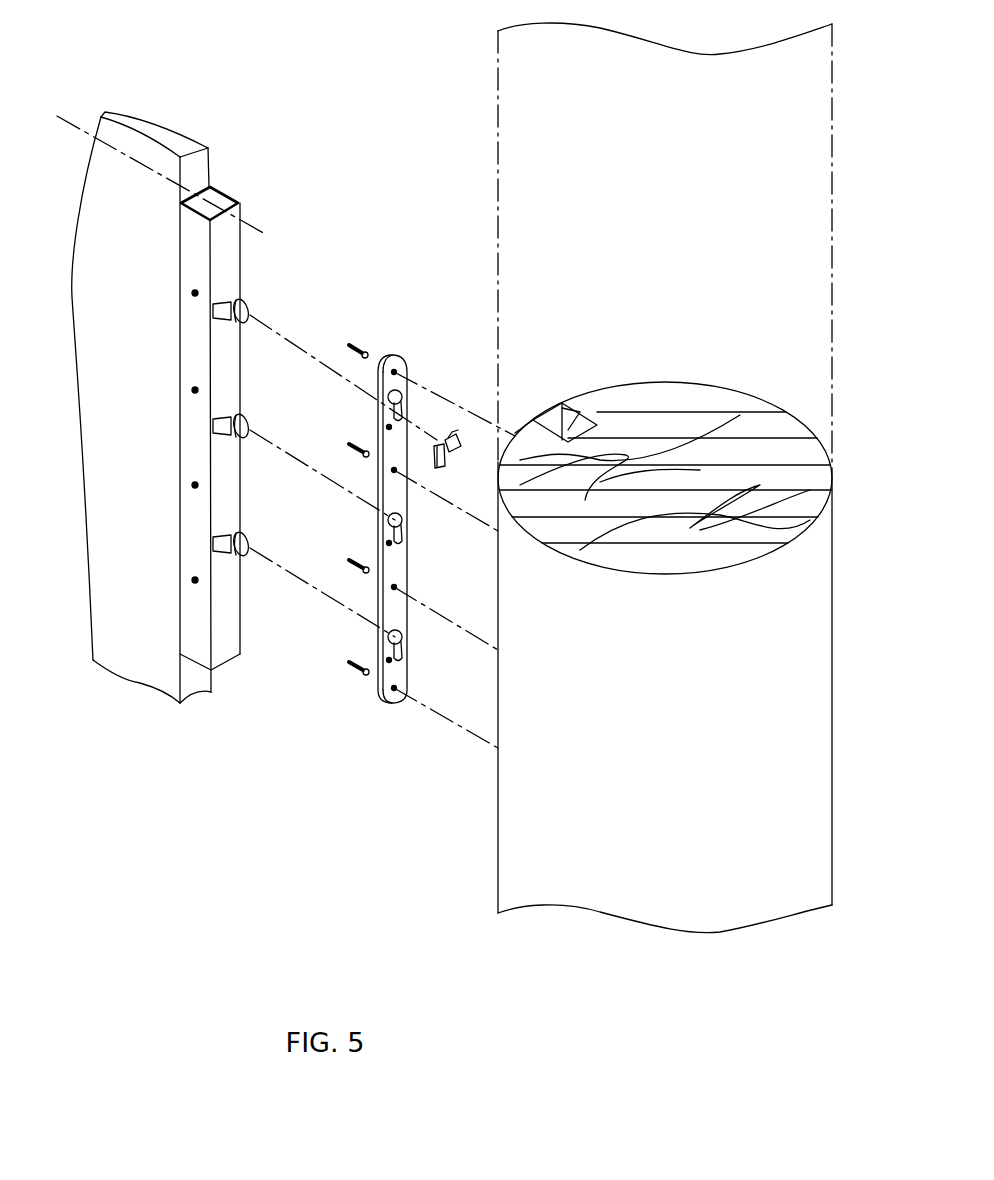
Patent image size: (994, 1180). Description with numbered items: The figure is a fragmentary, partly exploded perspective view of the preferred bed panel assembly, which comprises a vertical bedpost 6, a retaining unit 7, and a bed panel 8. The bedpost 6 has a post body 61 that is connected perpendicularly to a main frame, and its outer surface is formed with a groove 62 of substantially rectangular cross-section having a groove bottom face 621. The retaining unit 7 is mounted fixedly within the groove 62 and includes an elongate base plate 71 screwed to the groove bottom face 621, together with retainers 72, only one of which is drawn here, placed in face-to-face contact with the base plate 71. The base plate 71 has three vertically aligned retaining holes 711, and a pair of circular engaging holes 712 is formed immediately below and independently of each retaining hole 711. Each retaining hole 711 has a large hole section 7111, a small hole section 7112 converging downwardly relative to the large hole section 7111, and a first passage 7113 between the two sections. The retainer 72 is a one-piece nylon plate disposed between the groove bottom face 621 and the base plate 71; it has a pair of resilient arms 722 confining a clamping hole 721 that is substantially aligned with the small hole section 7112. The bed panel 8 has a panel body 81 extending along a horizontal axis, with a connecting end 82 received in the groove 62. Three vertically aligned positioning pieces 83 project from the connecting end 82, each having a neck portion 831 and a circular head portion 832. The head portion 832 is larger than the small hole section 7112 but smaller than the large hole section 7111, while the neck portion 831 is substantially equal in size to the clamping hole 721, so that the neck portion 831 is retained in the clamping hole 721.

The vertical bedpost 6 is at (833, 793).
The post body 61 is at (517, 840).
The groove 62 is at (567, 403).
The groove bottom face 621 is at (580, 412).
The retaining unit 7 is at (406, 345).
The base plate 71 is at (381, 368).
The retaining hole 711 is at (392, 395).
The large hole section 7111 is at (392, 392).
The small hole section 7112 is at (395, 410).
The first passage 7113 is at (498, 650).
The engaging hole 712 is at (388, 427).
The retainer 72 is at (445, 440).
The clamping hole 721 is at (458, 451).
The resilient arm 722 is at (447, 462).
The bed panel 8 is at (170, 108).
The panel body 81 is at (130, 115).
The connecting end 82 is at (216, 200).
The positioning piece 83 is at (232, 305).
The neck portion 831 is at (233, 310).
The head portion 832 is at (240, 328).